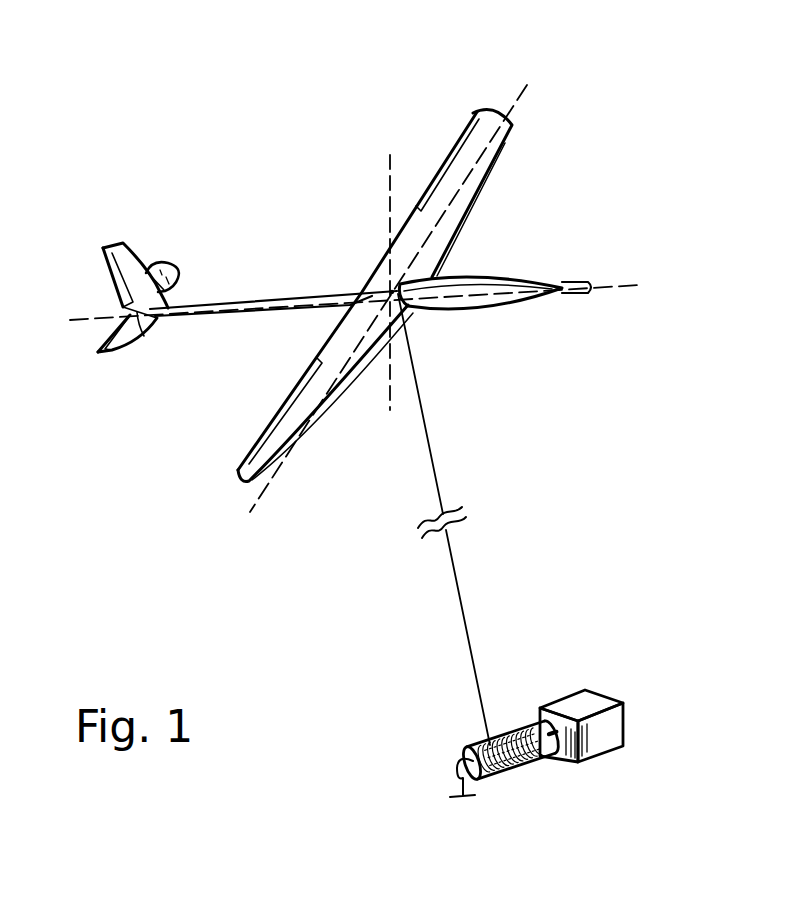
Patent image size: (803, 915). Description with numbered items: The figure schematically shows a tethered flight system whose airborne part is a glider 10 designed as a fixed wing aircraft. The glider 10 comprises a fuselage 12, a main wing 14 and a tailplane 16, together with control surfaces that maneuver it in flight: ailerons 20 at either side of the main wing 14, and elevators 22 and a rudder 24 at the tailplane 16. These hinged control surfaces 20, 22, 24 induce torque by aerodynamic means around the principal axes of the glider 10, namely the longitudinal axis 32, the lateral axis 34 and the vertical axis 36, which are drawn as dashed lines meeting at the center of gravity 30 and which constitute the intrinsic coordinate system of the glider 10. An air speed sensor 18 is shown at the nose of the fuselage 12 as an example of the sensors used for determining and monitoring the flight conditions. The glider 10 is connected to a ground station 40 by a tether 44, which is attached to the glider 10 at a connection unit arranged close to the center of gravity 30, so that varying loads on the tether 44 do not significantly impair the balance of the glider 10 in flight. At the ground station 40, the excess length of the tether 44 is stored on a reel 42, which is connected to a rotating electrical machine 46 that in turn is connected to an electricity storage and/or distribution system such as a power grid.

The glider 10 is at (624, 168).
The fuselage 12 is at (247, 311).
The main wing 14 is at (492, 129).
The tailplane 16 is at (144, 336).
The air speed sensor 18 is at (569, 292).
The ailerons 20 is at (448, 158).
The elevators 22 is at (151, 268).
The rudder 24 is at (107, 279).
The center of gravity 30 is at (388, 292).
The longitudinal axis 32 is at (600, 286).
The lateral axis 34 is at (526, 90).
The vertical axis 36 is at (391, 194).
The ground station 40 is at (542, 659).
The reel 42 is at (535, 764).
The tether 44 is at (460, 623).
The rotating electrical machine 46 is at (603, 733).